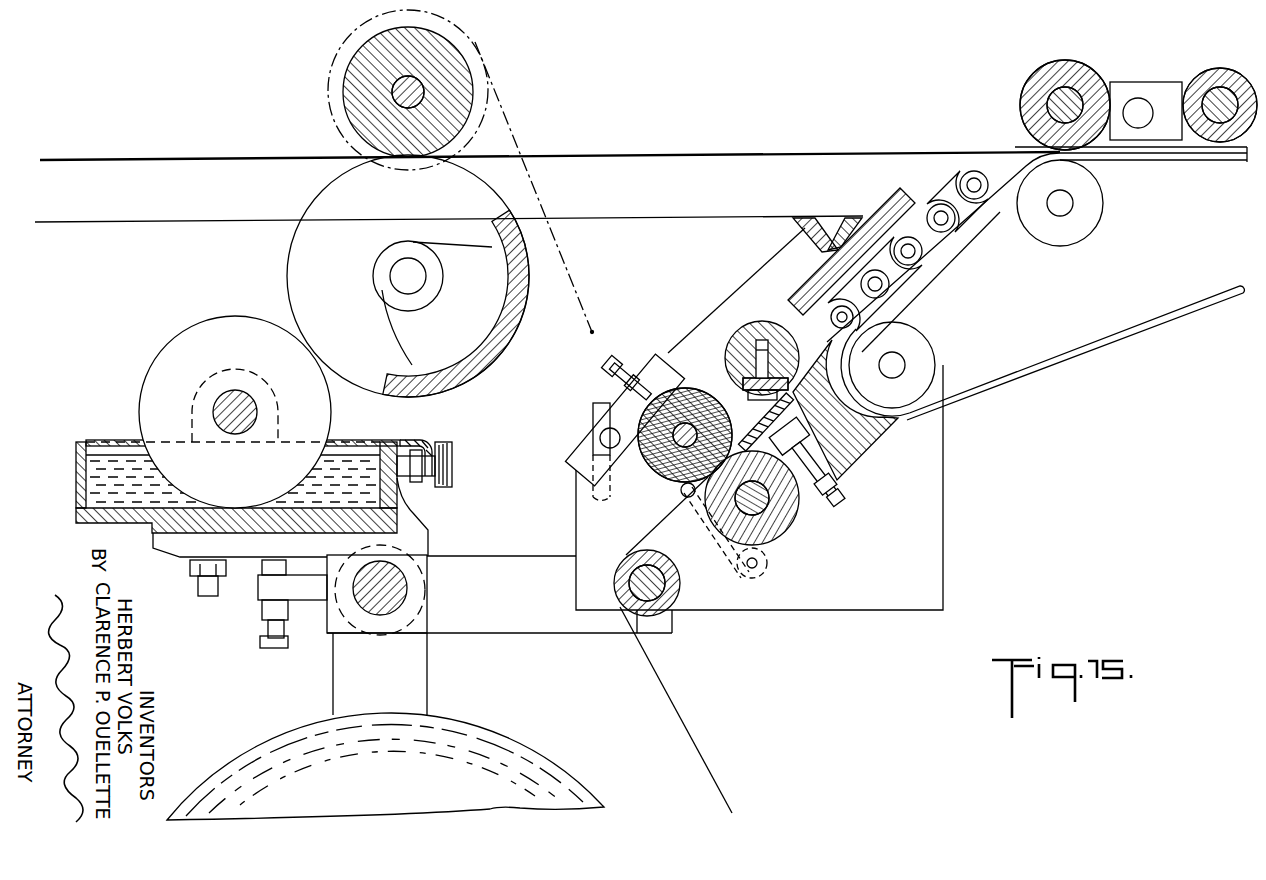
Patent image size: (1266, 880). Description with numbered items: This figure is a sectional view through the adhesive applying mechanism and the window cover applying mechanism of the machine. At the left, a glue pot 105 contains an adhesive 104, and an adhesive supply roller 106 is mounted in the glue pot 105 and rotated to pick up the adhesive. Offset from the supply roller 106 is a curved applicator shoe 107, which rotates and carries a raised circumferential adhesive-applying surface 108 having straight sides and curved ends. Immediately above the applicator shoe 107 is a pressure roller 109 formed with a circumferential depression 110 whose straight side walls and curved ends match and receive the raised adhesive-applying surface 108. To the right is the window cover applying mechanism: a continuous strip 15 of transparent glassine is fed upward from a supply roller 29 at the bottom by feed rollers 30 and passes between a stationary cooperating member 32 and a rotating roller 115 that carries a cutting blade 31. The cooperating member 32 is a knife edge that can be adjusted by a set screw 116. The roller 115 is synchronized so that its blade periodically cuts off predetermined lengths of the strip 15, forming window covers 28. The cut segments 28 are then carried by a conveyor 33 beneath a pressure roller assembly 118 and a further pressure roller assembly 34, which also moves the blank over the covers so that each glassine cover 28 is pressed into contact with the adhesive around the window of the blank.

The continuous strip 15 is at (675, 698).
The window cover 28 is at (957, 237).
The supply roller 29 is at (533, 773).
The feed rollers 30 is at (688, 390).
The cutting blade 31 is at (733, 377).
The stationary cooperating member 32 is at (773, 413).
The conveyor 33 is at (1131, 321).
The pressure roller assembly 34 is at (1153, 96).
The adhesive 104 is at (100, 498).
The glue pot 105 is at (80, 468).
The adhesive supply roller 106 is at (167, 364).
The curved applicator shoe 107 is at (476, 357).
The adhesive-applying surface 108 is at (444, 399).
The pressure roller 109 is at (454, 82).
The circumferential depression 110 is at (464, 54).
The rotating roller 115 is at (757, 331).
The set screw 116 is at (846, 493).
The pressure roller assembly 118 is at (923, 184).